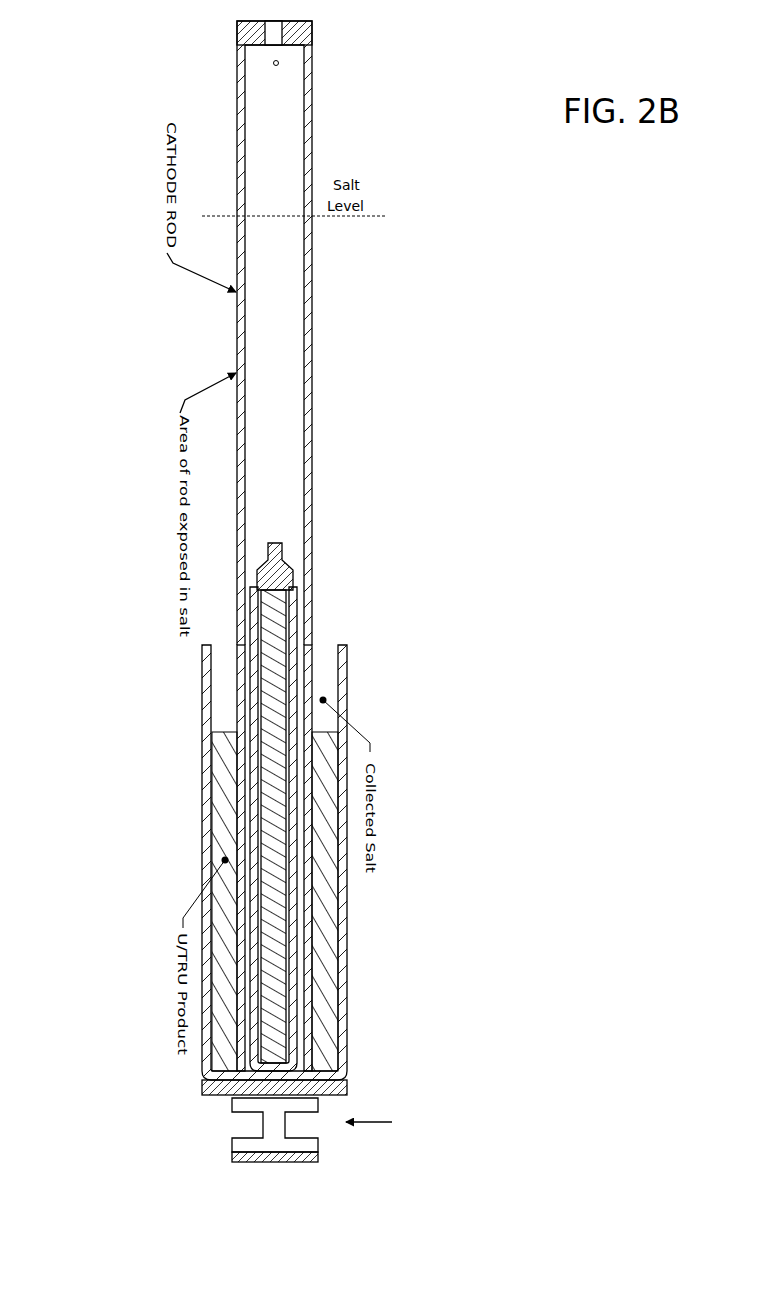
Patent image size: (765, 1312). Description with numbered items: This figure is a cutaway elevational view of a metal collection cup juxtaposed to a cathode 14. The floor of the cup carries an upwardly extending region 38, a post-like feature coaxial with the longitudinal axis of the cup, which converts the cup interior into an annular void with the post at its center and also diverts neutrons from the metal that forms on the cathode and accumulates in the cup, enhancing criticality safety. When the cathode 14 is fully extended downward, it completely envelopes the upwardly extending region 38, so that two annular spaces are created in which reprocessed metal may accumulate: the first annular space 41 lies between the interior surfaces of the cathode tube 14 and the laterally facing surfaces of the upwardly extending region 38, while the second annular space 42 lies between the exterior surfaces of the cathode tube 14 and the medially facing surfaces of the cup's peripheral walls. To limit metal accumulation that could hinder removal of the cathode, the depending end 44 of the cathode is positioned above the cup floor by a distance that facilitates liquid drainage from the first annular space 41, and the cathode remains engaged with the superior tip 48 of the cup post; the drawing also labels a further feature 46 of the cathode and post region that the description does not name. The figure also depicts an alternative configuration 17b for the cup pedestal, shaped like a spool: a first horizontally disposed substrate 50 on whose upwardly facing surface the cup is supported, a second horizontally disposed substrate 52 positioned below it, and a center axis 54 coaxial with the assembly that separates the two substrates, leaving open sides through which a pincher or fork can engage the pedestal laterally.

The cathode 14 is at (300, 402).
The upwardly extending region 38 is at (247, 1068).
The first annular space 41 is at (300, 975).
The second annular space 42 is at (318, 1028).
The depending end 44 is at (307, 1067).
The cathode rod 46 is at (265, 578).
The superior tip 48 is at (285, 553).
The first horizontally disposed substrate 50 is at (265, 1100).
The second horizontally disposed substrate 52 is at (288, 1147).
The center axis 54 is at (272, 1127).
The alternative configuration 17b is at (396, 1120).